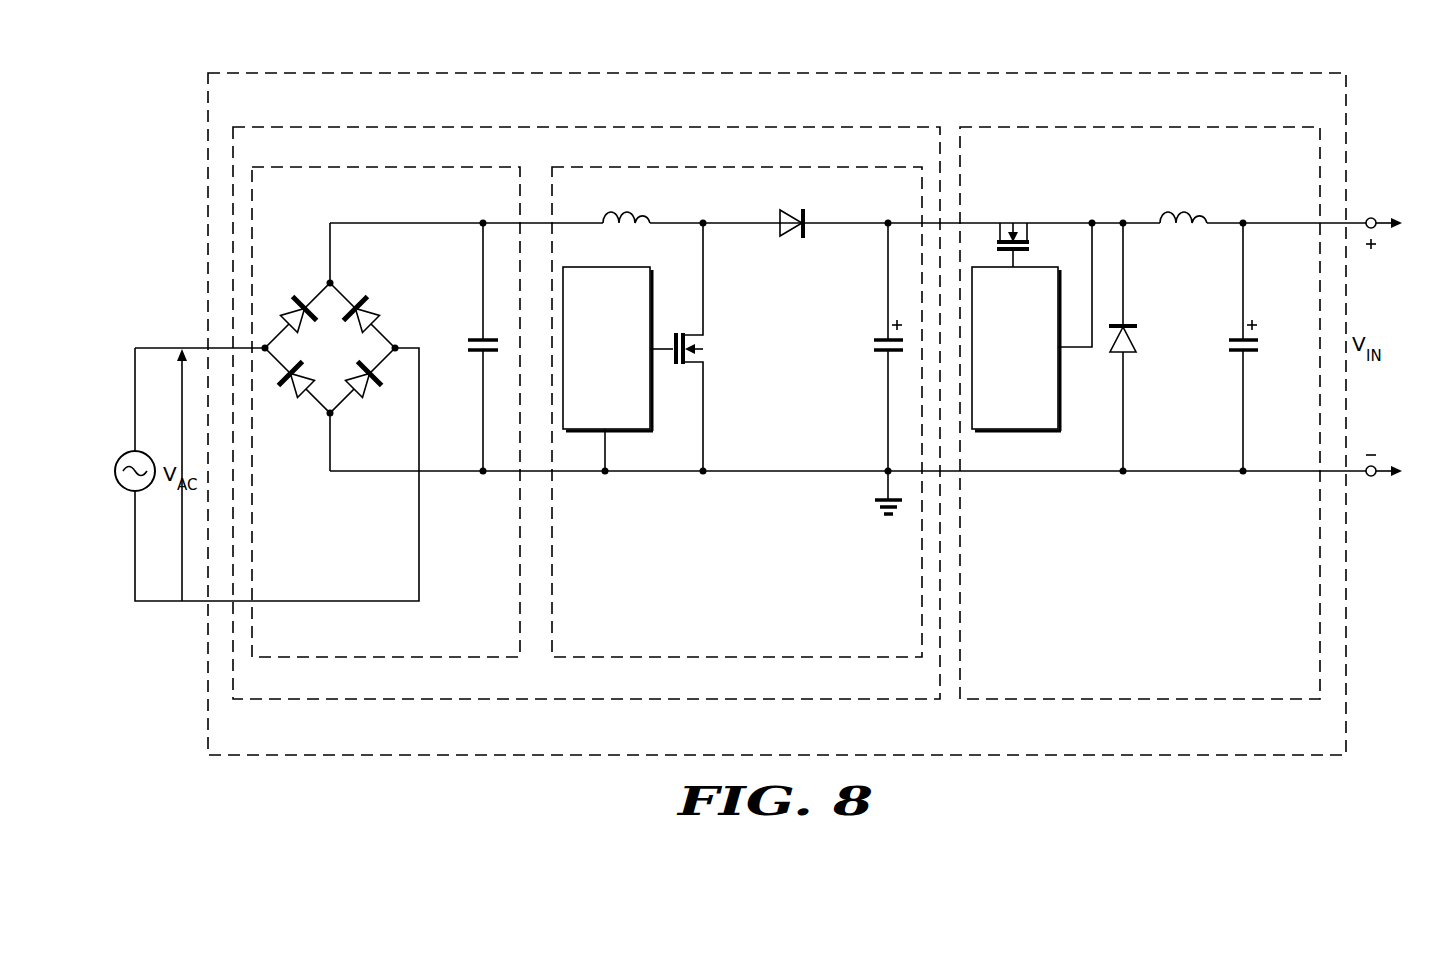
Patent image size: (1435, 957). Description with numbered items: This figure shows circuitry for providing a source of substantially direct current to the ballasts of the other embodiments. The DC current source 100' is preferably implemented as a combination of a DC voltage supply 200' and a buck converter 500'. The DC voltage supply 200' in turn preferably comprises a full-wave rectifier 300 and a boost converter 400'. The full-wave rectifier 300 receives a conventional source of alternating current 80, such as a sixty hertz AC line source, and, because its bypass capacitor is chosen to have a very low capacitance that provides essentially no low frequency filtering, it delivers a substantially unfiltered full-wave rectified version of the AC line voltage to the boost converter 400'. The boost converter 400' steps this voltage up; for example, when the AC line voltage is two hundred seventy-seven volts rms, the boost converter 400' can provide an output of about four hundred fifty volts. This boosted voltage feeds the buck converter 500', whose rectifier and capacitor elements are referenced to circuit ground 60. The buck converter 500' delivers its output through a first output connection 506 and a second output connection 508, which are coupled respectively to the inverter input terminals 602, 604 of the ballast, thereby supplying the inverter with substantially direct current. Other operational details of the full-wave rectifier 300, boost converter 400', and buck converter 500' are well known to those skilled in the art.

The DC current source 100' is at (777, 396).
The DC voltage supply 200' is at (586, 396).
The full-wave rectifier circuit 300 is at (386, 166).
The boost converter 400' is at (737, 394).
The buck converter 500' is at (1140, 396).
The first output connection 506 is at (1371, 218).
The second output connection 508 is at (1371, 476).
The first inverter input terminal 602 is at (1405, 223).
The second inverter input terminal 604 is at (1405, 471).
The source of alternating current 80 is at (123, 455).
The circuit ground 60 is at (887, 491).